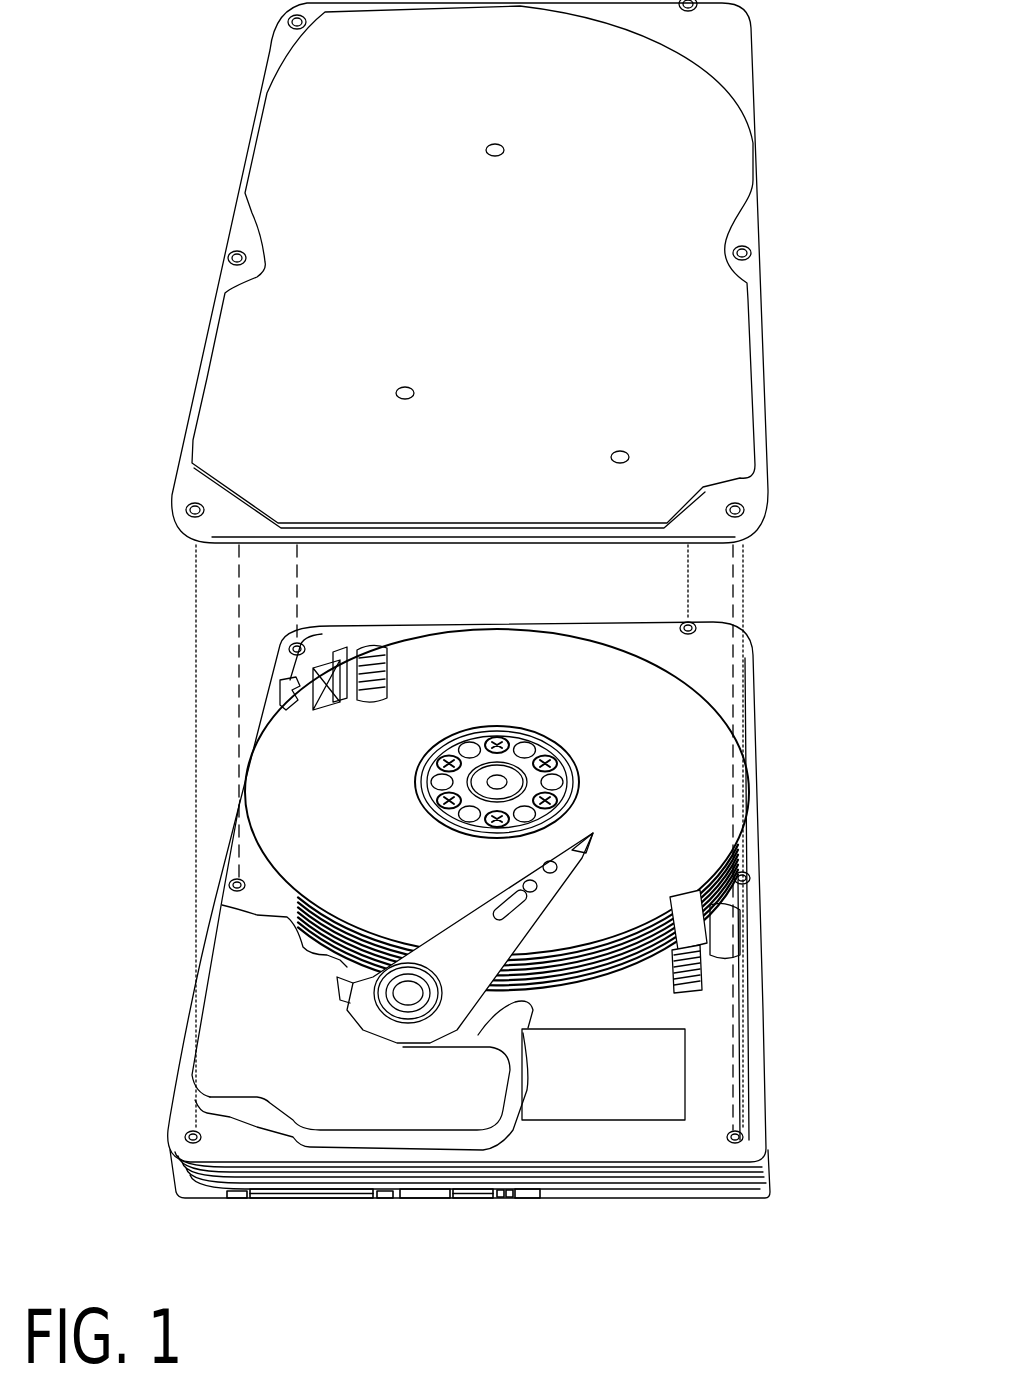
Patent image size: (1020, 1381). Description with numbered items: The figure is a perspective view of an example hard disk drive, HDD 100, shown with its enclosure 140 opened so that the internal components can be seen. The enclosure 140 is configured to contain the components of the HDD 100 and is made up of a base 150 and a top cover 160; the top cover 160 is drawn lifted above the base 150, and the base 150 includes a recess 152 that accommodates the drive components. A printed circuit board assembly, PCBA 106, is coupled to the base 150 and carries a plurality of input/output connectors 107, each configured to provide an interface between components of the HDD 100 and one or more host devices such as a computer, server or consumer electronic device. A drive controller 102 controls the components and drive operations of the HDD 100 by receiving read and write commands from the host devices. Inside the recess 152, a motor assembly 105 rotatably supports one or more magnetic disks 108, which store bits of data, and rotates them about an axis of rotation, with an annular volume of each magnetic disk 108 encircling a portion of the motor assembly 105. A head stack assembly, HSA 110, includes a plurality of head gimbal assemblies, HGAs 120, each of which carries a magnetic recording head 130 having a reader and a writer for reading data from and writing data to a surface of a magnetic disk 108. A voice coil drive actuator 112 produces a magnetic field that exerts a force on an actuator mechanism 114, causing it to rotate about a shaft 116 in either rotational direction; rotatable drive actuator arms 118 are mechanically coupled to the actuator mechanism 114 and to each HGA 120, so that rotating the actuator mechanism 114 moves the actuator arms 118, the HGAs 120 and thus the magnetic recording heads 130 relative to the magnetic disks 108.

The hard disk drive 100 is at (152, 66).
The top cover 160 is at (516, 289).
The enclosure 140 is at (771, 199).
The base 150 is at (186, 1082).
The recess 152 is at (257, 903).
The motor assembly 105 is at (427, 746).
The magnetic disk 108 is at (706, 797).
The head stack assembly 110 is at (510, 1008).
The voice coil drive actuator 112 is at (316, 1059).
The actuator mechanism 114 is at (358, 995).
The shaft 116 is at (408, 993).
The rotatable drive actuator arm 118 is at (470, 943).
The head gimbal assembly 120 is at (572, 848).
The magnetic recording head 130 is at (593, 833).
The drive controller 102 is at (629, 1094).
The printed circuit board assembly 106 is at (315, 1207).
The input/output connector 107 is at (347, 1199).